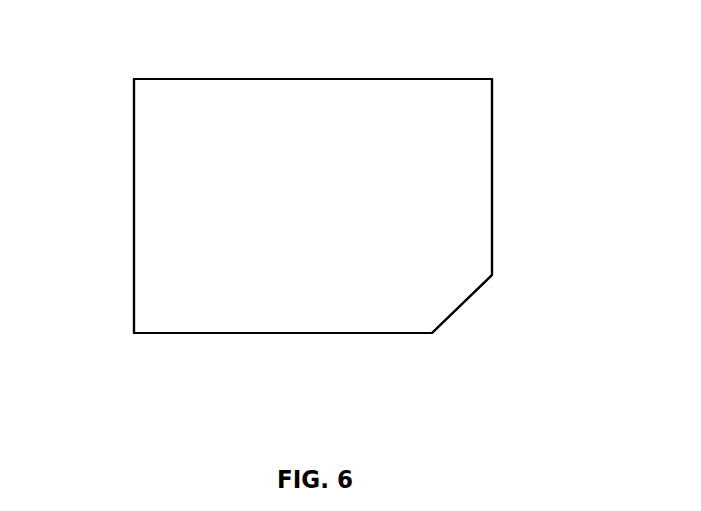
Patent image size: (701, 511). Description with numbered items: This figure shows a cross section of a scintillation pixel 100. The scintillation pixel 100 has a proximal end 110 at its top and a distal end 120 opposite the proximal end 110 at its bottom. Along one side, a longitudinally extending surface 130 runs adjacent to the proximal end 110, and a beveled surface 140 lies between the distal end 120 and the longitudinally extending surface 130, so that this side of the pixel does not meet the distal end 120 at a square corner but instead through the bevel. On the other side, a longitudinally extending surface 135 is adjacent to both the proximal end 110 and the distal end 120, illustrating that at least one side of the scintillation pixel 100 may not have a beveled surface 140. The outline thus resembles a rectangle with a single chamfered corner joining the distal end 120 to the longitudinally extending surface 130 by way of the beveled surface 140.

The scintillation pixel 100 is at (148, 145).
The proximal end 110 is at (385, 79).
The distal end 120 is at (253, 333).
The longitudinally extending surface 130 is at (492, 112).
The longitudinally extending surface 135 is at (134, 268).
The beveled surface 140 is at (452, 315).